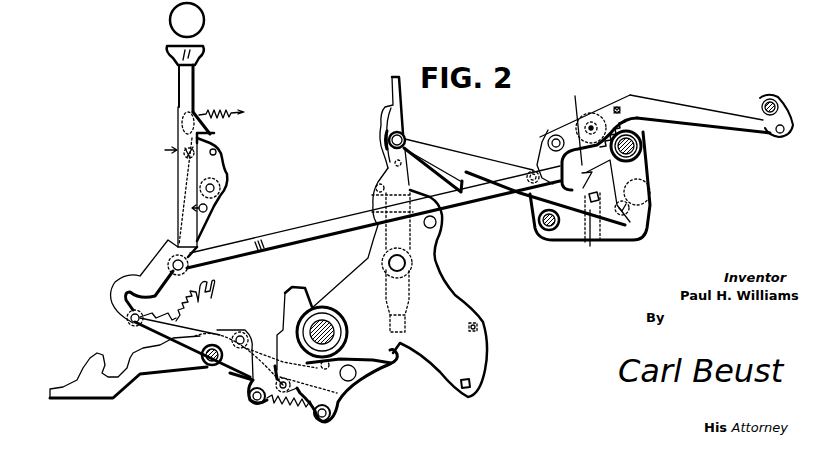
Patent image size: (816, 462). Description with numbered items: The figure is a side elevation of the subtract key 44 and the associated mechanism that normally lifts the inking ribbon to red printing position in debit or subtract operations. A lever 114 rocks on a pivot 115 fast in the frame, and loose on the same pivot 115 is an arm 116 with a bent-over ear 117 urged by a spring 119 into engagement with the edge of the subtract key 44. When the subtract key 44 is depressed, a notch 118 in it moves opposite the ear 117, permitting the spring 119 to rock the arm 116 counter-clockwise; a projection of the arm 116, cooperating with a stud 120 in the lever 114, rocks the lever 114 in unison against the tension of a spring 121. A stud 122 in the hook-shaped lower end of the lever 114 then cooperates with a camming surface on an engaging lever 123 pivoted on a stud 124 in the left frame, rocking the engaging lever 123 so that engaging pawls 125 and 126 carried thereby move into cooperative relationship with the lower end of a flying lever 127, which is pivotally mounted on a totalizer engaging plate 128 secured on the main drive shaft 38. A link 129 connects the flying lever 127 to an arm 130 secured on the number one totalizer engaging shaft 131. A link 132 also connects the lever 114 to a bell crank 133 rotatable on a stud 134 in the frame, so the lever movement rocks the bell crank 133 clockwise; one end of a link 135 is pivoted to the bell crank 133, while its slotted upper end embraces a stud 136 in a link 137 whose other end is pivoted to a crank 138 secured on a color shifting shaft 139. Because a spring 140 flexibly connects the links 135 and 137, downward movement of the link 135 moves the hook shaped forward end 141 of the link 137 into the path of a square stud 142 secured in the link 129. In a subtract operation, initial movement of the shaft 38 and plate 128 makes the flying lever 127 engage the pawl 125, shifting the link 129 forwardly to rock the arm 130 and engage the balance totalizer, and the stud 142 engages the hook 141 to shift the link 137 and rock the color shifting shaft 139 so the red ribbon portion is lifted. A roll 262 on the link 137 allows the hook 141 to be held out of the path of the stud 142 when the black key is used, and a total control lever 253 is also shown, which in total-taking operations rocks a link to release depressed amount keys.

The subtract key 44 is at (183, 88).
The bent-over ear 117 is at (211, 134).
The notch 118 is at (188, 134).
The spring 121 is at (209, 113).
The spring 119 is at (183, 160).
The arm 116 is at (220, 173).
The pivot 115 is at (225, 190).
The stud 120 is at (212, 209).
The lever 114 is at (168, 241).
The stud 122 is at (130, 322).
The engaging lever 123 is at (145, 334).
The stud 124 is at (218, 331).
The total control lever 253 is at (77, 371).
The link 132 is at (303, 231).
The engaging pawl 126 is at (295, 288).
The main drive shaft 38 is at (331, 323).
The engaging pawl 125 is at (390, 361).
The totalizer engaging plate 128 is at (438, 274).
The flying lever 127 is at (407, 310).
The link 129 is at (500, 149).
The hook shaped forward end 141 is at (553, 161).
The roll 262 is at (558, 130).
The stud 136 is at (600, 108).
The spring 140 is at (636, 108).
The link 137 is at (670, 114).
The crank 138 is at (787, 121).
The color shifting shaft 139 is at (761, 101).
The No. 1 totalizer engaging shaft 131 is at (641, 140).
The arm 130 is at (645, 171).
The link 135 is at (588, 176).
The stud 134 is at (539, 223).
The bell crank 133 is at (580, 236).
The square stud 142 is at (592, 244).